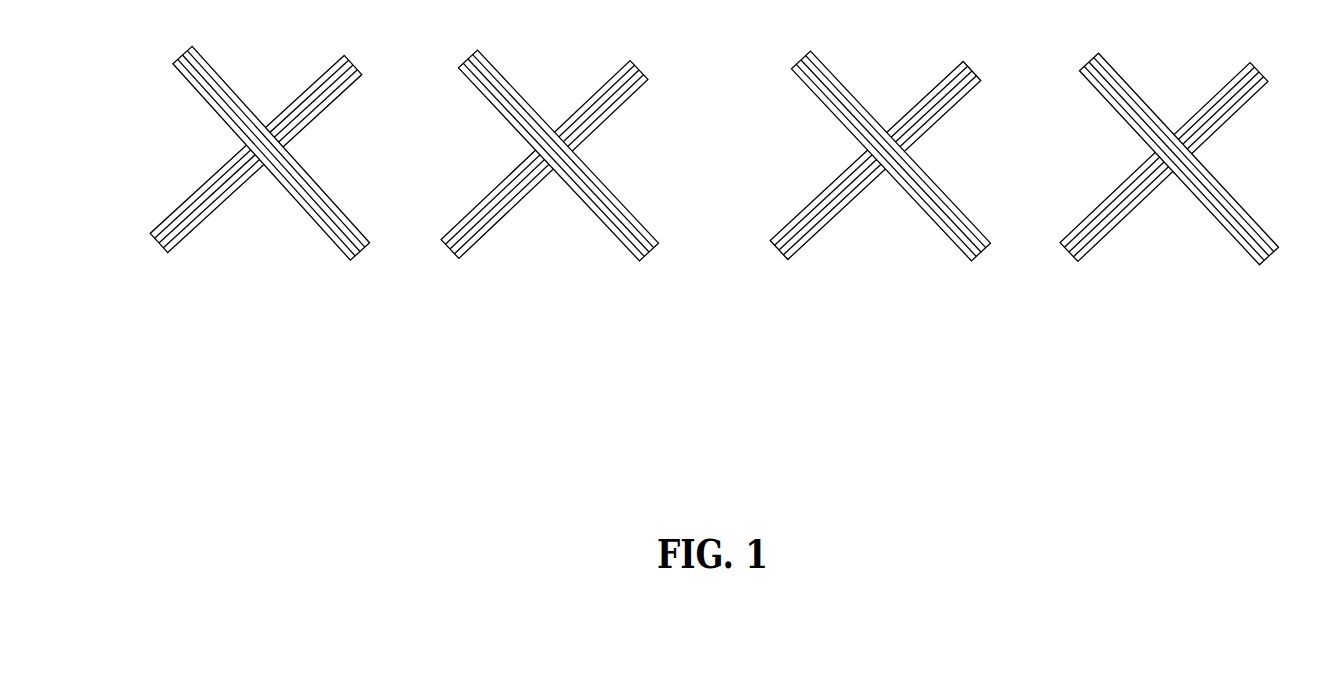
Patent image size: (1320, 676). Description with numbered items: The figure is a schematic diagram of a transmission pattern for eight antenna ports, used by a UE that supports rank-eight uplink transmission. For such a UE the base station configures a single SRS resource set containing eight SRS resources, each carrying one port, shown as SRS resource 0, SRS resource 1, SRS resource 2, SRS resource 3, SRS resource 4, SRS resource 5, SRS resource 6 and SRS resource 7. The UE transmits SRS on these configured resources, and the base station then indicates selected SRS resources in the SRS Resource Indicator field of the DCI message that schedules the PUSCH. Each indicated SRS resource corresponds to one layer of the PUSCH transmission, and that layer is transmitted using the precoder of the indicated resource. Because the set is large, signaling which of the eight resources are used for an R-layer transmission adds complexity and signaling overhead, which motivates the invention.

The SRS resource r0 0 is at (242, 184).
The SRS resource r1 1 is at (532, 187).
The SRS resource r2 2 is at (861, 188).
The SRS resource r3 3 is at (1151, 188).
The SRS resource r4 4 is at (271, 179).
The SRS resource r5 5 is at (559, 181).
The SRS resource r6 6 is at (891, 182).
The SRS resource r7 7 is at (1179, 183).